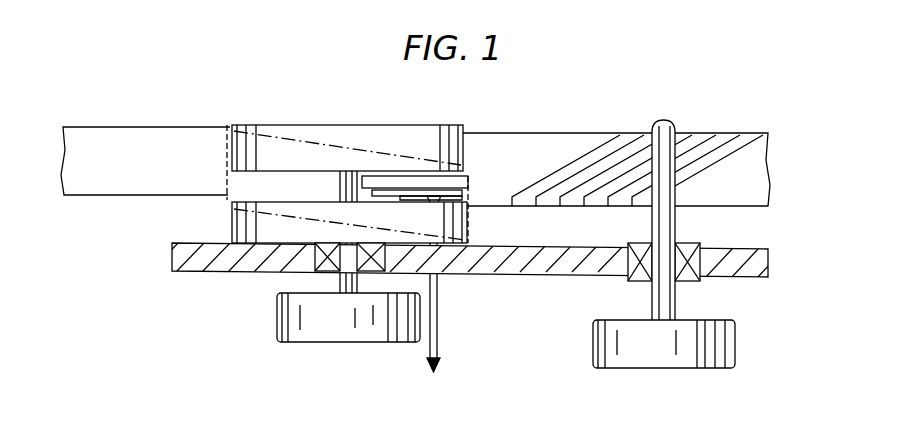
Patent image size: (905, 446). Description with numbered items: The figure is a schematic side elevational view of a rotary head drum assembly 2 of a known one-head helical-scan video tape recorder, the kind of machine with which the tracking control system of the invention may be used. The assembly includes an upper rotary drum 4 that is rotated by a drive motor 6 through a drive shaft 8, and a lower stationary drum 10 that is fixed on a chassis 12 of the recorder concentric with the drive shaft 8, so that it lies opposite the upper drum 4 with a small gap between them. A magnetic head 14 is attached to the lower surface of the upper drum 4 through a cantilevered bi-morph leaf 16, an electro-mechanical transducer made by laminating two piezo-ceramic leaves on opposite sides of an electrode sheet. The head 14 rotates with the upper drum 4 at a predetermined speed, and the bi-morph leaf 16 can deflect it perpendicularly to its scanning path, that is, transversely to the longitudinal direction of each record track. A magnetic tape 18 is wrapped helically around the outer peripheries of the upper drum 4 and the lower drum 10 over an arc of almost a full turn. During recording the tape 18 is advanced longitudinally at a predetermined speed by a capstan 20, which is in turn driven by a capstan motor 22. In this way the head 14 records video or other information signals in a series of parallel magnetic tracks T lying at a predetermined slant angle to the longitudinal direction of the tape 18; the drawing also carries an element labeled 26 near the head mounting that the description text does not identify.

The rotary head drum assembly 2 is at (232, 100).
The upper rotary drum 4 is at (386, 128).
The drive motor 6 is at (388, 336).
The drive shaft 8 is at (336, 284).
The lower stationary drum 10 is at (230, 223).
The chassis 12 is at (196, 263).
The magnetic head 14 is at (472, 193).
The cantilevered bi-morph leaf 16 is at (428, 196).
The magnetic tape 18 is at (503, 140).
The capstan 20 is at (675, 122).
The capstan motor 22 is at (696, 362).
The cutter 26 is at (412, 196).
The magnetic tracks T is at (558, 160).